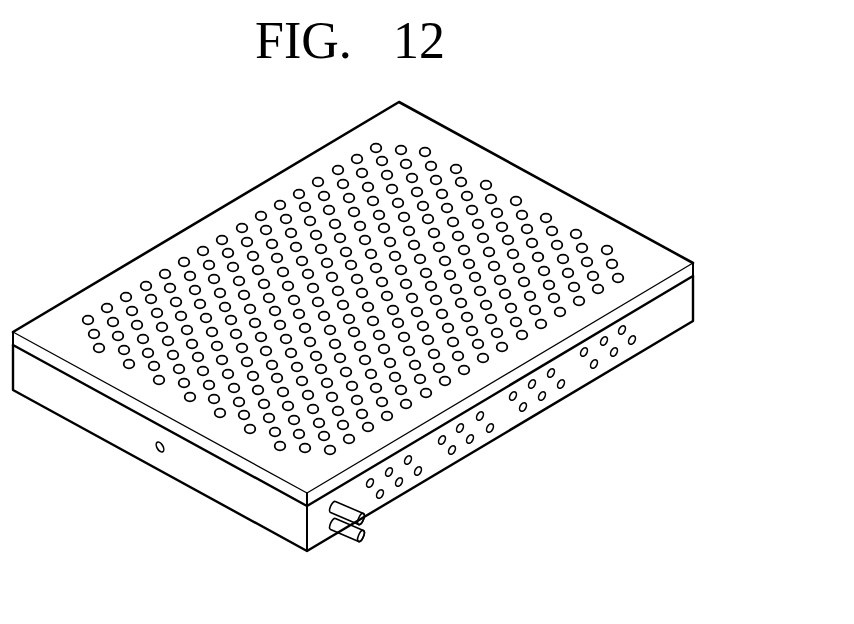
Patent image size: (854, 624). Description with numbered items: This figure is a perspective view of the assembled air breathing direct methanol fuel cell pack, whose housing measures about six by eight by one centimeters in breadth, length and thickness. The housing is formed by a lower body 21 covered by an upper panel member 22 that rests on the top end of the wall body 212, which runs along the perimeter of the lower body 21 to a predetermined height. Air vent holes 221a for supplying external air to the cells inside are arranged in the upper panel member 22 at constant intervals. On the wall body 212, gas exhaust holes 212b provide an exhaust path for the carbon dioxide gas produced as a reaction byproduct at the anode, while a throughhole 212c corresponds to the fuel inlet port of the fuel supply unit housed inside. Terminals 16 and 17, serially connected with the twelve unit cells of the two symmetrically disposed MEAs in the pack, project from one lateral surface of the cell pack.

The lower body 21 is at (390, 340).
The upper panel member 22 is at (353, 304).
The air vent holes 221a is at (240, 222).
The wall body 212 is at (377, 413).
The gas exhaust holes 212b is at (493, 431).
The throughhole 212c is at (155, 450).
The terminal 16 is at (365, 521).
The terminal 17 is at (364, 538).